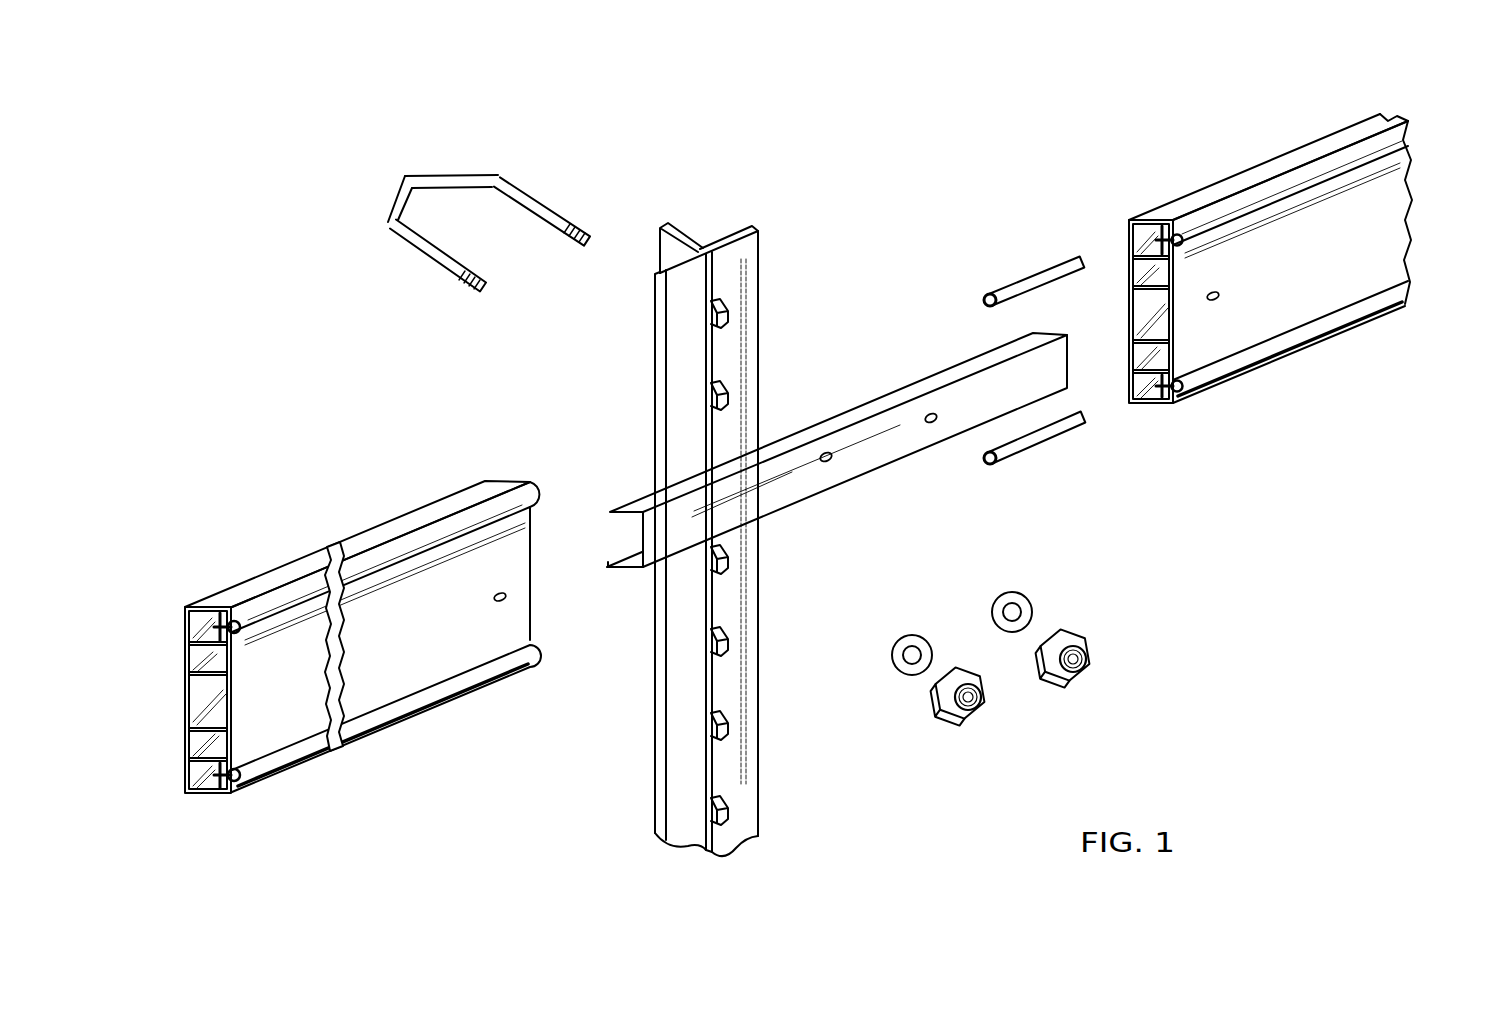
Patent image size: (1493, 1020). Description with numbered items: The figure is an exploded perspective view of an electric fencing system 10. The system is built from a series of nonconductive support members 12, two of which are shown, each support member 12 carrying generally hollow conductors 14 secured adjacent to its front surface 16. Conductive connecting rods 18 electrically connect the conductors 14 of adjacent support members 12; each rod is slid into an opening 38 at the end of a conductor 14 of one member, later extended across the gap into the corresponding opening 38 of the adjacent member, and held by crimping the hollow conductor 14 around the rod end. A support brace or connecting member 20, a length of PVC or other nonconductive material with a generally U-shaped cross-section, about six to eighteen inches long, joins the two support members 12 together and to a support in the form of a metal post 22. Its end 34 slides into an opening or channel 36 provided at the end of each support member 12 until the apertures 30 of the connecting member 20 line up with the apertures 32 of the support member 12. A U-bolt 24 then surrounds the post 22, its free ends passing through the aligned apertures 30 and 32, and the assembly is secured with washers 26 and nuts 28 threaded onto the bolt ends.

The electric fencing system 10 is at (1214, 728).
The nonconductive support member 12 is at (802, 451).
The hollow conductor 14 is at (278, 605).
The front surface 16 is at (403, 678).
The conductive connecting rod 18 is at (1055, 268).
The connecting member 20 is at (848, 450).
The metal post 22 is at (768, 313).
The U-bolt 24 is at (534, 197).
The washer 26 is at (899, 643).
The nut 28 is at (958, 722).
The aperture of the connecting member 30 is at (925, 420).
The aperture of the support member 32 is at (494, 598).
The end of the connecting member 34 is at (640, 531).
The channel 36 is at (530, 578).
The opening of the conductor 38 is at (542, 490).